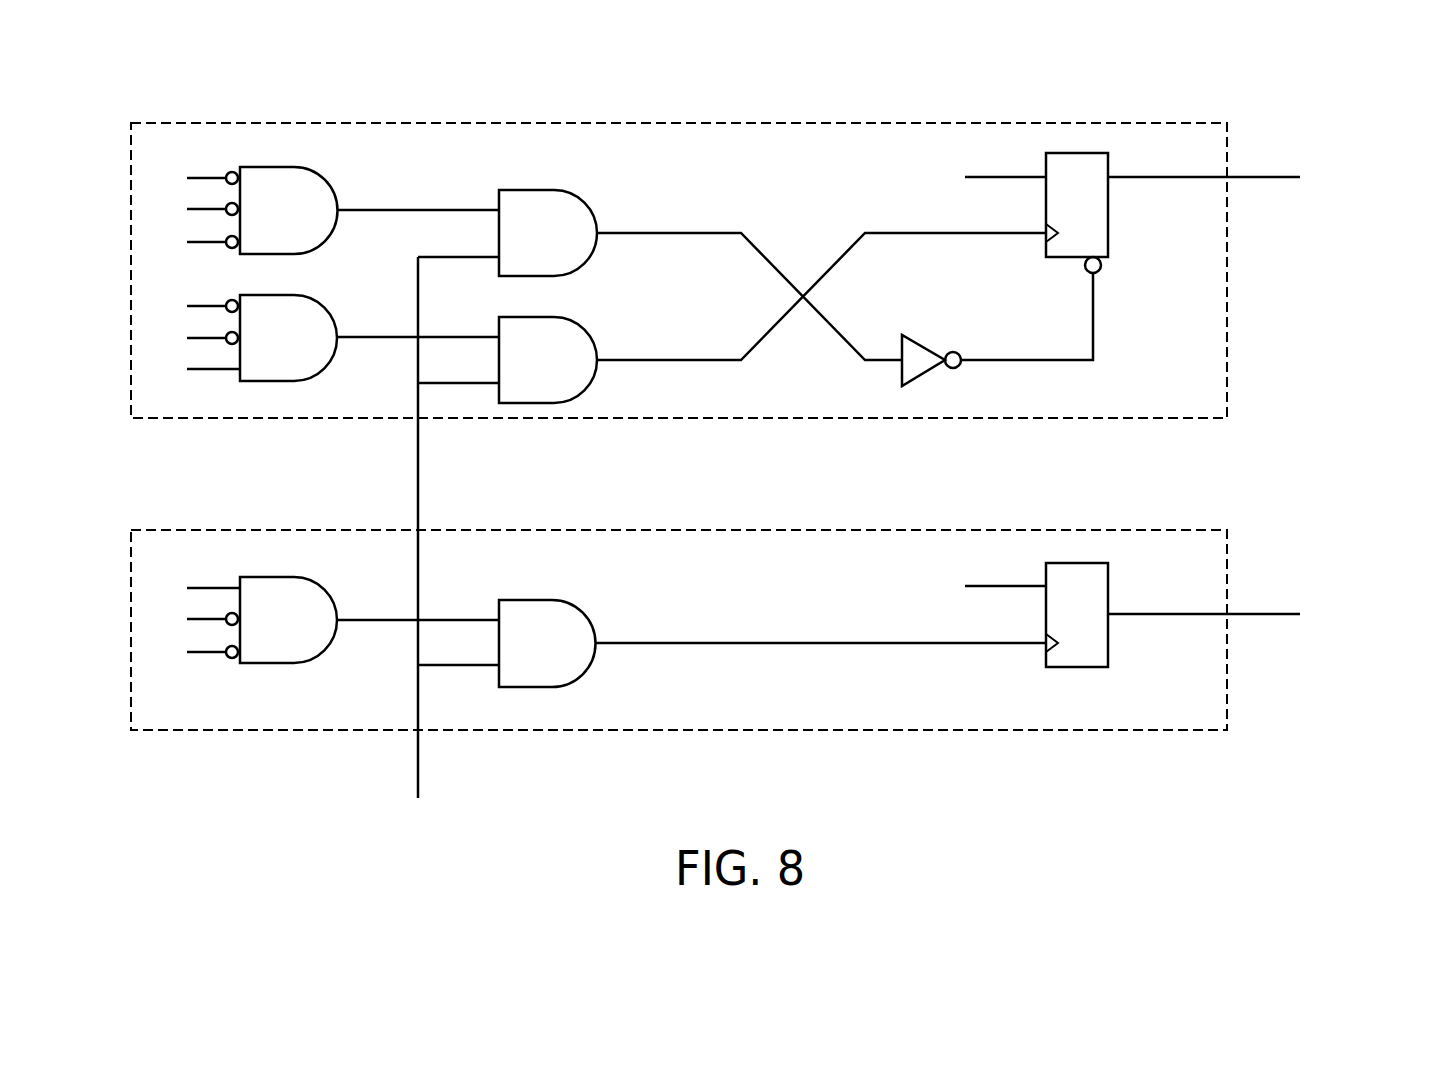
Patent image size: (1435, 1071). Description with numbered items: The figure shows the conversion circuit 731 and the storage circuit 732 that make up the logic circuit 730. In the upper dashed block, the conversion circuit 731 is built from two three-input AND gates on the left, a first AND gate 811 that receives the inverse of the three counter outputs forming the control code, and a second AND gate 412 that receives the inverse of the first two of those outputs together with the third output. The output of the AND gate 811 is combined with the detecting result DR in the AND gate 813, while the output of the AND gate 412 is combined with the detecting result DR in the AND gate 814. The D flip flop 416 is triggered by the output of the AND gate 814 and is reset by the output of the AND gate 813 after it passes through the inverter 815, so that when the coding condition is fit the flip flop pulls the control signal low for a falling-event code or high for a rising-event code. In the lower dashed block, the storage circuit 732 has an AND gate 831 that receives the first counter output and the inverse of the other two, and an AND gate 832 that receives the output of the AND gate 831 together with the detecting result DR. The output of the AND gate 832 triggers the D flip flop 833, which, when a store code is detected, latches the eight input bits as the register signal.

The logic circuit 730 is at (132, 83).
The conversion circuit 731 is at (1227, 302).
The storage circuit 732 is at (1227, 677).
The AND gate 811 is at (323, 174).
The second AND gate 412 is at (323, 302).
The AND gate 813 is at (583, 200).
The AND gate 814 is at (583, 327).
The inverter 815 is at (927, 343).
The flip-flop 416 is at (1112, 236).
The AND gate 831 is at (323, 583).
The AND gate 832 is at (583, 610).
The D flip flop 833 is at (1112, 588).